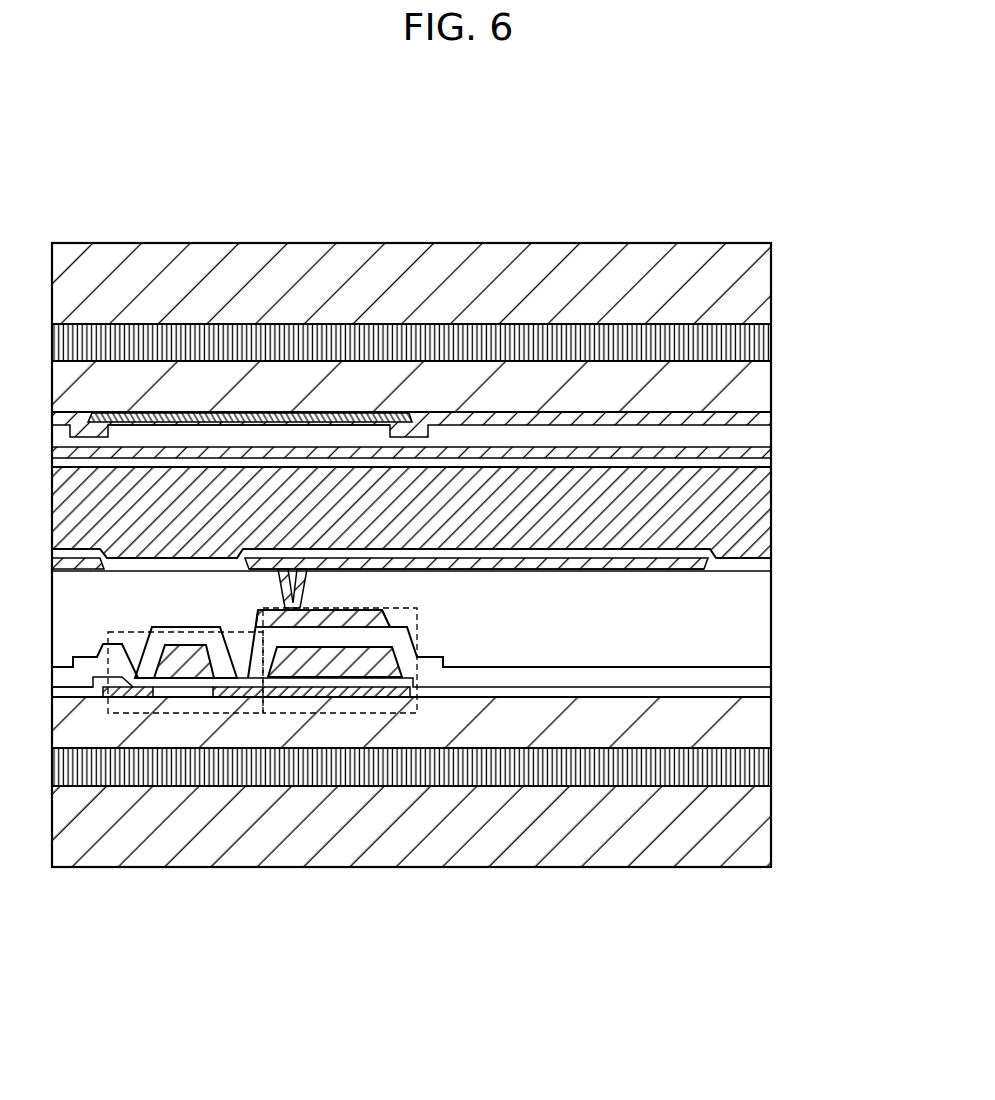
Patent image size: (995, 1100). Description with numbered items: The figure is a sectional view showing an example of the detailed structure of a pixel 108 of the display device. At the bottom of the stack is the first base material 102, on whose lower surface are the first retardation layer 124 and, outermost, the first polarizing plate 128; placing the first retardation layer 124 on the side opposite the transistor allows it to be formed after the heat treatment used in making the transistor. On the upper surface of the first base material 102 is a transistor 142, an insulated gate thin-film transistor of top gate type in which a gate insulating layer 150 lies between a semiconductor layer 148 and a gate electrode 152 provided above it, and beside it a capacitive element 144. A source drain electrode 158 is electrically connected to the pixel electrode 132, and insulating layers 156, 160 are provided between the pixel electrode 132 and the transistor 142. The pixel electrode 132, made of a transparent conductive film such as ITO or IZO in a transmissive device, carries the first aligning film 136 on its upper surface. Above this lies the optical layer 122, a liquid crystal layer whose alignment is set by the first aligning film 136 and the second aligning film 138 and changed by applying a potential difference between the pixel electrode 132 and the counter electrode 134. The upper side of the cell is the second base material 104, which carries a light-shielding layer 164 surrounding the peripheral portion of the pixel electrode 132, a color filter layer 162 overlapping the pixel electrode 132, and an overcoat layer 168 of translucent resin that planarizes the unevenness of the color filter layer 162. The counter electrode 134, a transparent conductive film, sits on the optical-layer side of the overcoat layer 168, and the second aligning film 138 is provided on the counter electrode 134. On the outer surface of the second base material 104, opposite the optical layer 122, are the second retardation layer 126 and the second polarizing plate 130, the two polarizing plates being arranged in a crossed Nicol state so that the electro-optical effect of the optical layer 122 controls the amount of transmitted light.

The pixel 108 is at (659, 182).
The second polarizing plate 130 is at (753, 285).
The second retardation layer 126 is at (753, 344).
The second base material 104 is at (753, 387).
The color filter layer 162 is at (465, 420).
The overcoat layer 168 is at (753, 438).
The light-shielding layer 164 is at (293, 410).
The counter electrode 134 is at (637, 455).
The second aligning film 138 is at (753, 464).
The optical layer 122 is at (753, 511).
The first aligning film 136 is at (753, 566).
The pixel electrode 132 is at (634, 560).
The insulating layer 160 is at (753, 622).
The insulating layer 156 is at (753, 680).
The transistor 142 is at (156, 803).
The semiconductor layer 148 is at (170, 684).
The gate insulating layer 150 is at (202, 665).
The gate electrode 152 is at (232, 655).
The capacitive element 144 is at (318, 780).
The source drain electrode 158 is at (262, 626).
The first base material 102 is at (753, 724).
The first retardation layer 124 is at (753, 771).
The first polarizing plate 128 is at (753, 827).